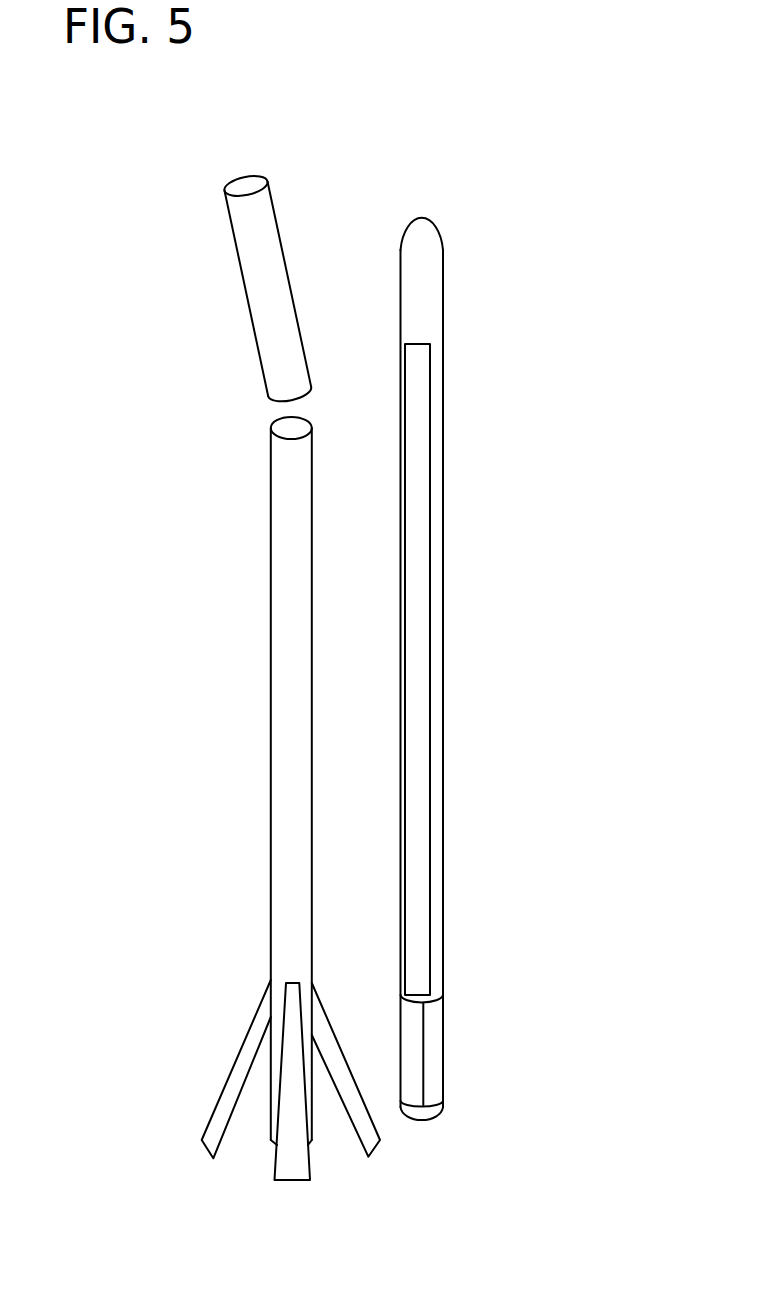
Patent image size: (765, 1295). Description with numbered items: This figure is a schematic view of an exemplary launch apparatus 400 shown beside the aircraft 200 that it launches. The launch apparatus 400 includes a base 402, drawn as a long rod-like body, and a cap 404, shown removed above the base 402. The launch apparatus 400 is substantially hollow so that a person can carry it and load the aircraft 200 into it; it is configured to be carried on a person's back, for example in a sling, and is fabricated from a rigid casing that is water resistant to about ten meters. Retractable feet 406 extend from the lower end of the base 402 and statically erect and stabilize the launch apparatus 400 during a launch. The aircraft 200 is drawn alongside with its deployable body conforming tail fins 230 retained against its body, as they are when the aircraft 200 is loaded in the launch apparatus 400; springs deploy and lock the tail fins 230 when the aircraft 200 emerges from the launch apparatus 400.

The aircraft 200 is at (453, 300).
The deployable body conforming tail fins 230 is at (410, 1019).
The launch apparatus 400 is at (218, 438).
The base 402 is at (271, 628).
The cap 404 is at (273, 214).
The retractable feet 406 is at (205, 1156).